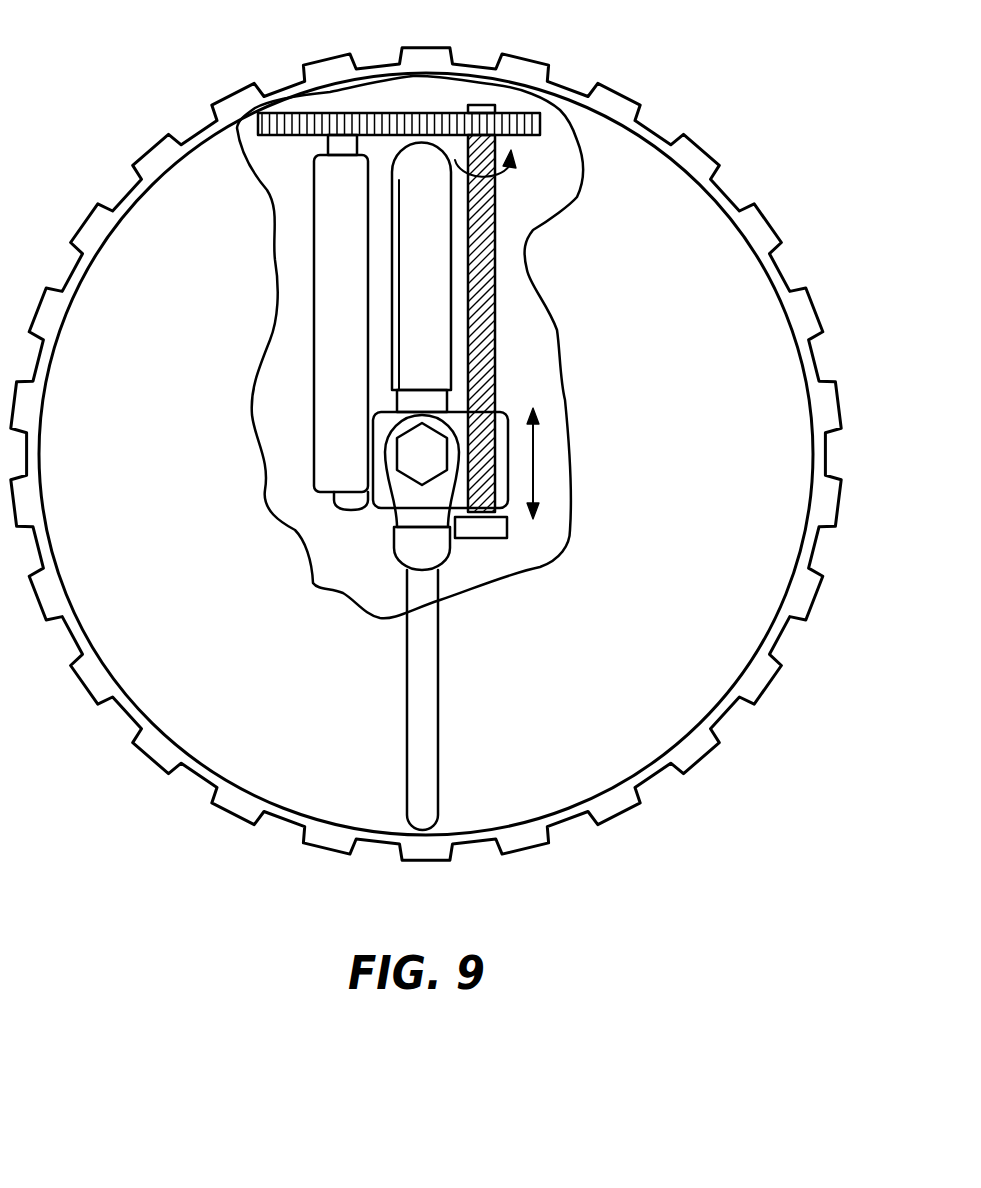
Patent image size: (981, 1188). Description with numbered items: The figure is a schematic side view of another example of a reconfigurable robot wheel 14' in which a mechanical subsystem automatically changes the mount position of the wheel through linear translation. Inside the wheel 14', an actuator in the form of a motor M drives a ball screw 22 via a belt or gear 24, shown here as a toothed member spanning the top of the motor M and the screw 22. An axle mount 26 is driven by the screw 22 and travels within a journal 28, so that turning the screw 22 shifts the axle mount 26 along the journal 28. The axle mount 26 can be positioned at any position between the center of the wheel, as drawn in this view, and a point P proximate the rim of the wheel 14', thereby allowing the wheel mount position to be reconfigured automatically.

The wheel 14' is at (426, 435).
The belt or gear 24 is at (542, 128).
The ball screw 22 is at (490, 245).
The journal 28 is at (416, 308).
The axle mount 26 is at (421, 458).
The point proximate the rim P is at (423, 158).
The motor M is at (341, 322).